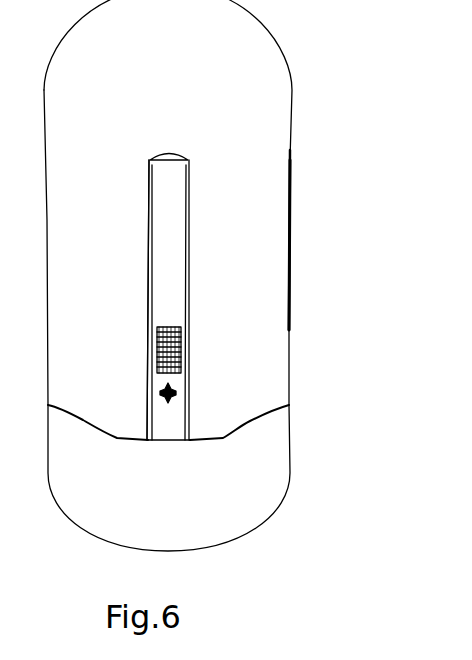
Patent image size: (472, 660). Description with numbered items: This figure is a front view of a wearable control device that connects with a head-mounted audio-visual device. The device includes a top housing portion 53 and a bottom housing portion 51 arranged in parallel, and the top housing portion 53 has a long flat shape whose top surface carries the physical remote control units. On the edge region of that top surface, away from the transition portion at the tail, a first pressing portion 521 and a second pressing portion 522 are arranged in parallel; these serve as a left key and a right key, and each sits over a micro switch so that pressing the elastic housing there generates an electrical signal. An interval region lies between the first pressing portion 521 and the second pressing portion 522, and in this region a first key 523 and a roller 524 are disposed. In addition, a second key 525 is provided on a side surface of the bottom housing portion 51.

The bottom housing portion 51 is at (228, 496).
The top housing portion 53 is at (238, 124).
The first pressing portion 521 is at (243, 368).
The second pressing portion 522 is at (88, 368).
The first key 523 is at (176, 392).
The roller 524 is at (181, 345).
The second key 525 is at (291, 262).